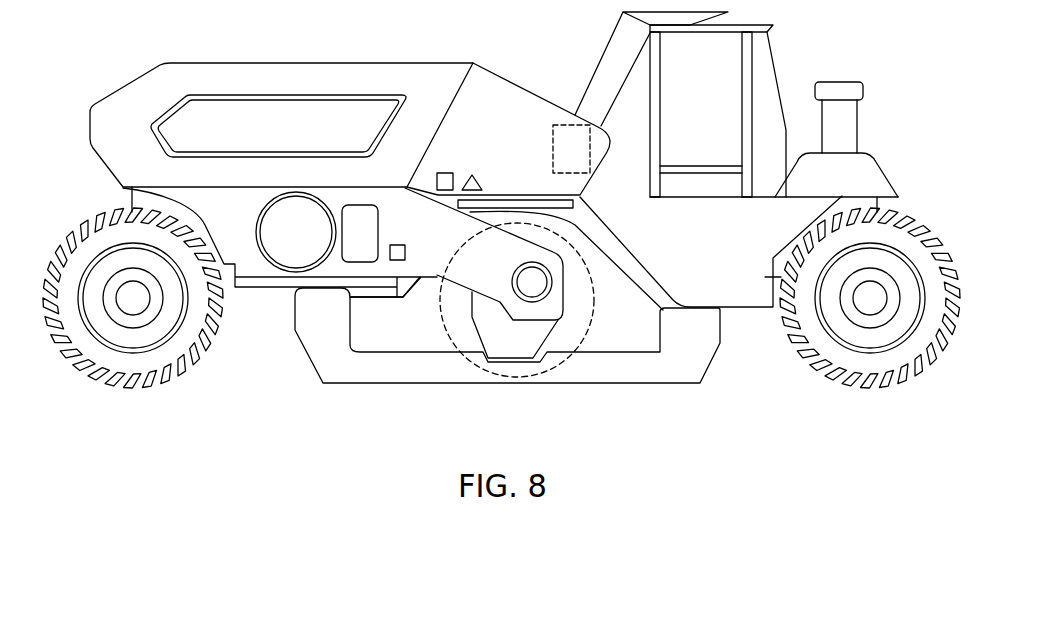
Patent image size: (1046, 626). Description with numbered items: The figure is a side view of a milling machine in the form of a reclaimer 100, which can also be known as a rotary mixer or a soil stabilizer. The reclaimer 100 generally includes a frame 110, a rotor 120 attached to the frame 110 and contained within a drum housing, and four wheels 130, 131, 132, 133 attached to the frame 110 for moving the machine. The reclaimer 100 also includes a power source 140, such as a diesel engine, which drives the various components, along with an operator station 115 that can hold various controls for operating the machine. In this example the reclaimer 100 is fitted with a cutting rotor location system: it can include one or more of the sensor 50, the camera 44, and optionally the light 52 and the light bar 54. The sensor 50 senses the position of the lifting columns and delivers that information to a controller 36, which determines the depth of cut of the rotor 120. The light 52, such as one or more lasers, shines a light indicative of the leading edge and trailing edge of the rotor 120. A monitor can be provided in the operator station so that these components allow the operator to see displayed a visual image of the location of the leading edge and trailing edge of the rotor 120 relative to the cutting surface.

The reclaimer 100 is at (501, 227).
The frame 110 is at (532, 118).
The operator cab frame 115 is at (773, 55).
The rotor 120 is at (520, 347).
The wheel 130 is at (103, 355).
The wheel 131 is at (150, 388).
The wheel 132 is at (903, 357).
The wheel 133 is at (857, 387).
The power source 140 is at (285, 112).
The controller 36 is at (553, 133).
The camera 44 is at (483, 186).
The sensor 50 is at (402, 245).
The light 52 is at (447, 173).
The light bar 54 is at (573, 201).